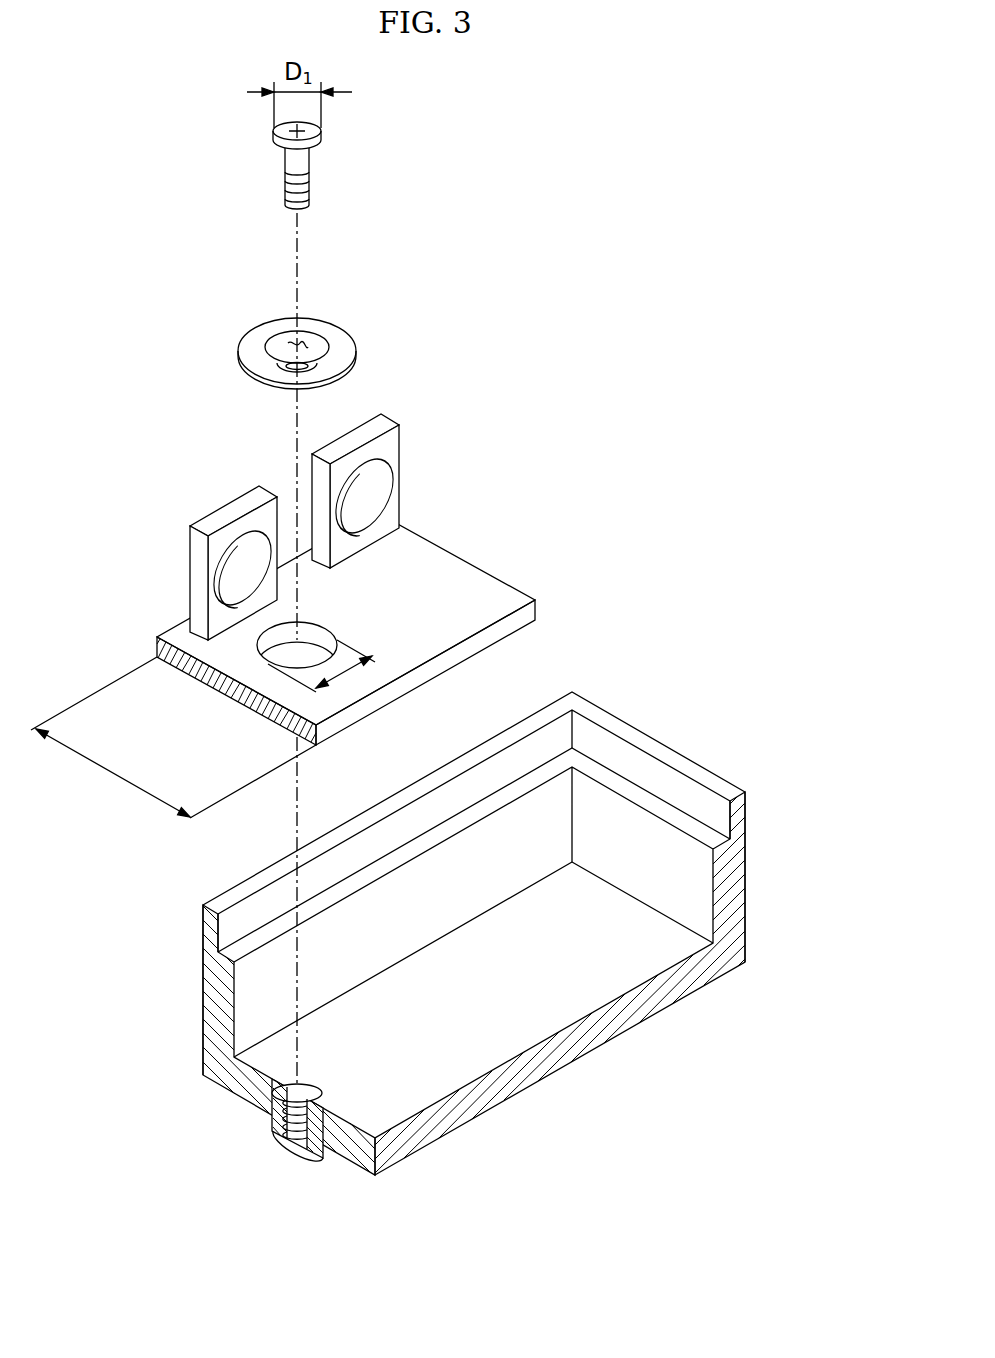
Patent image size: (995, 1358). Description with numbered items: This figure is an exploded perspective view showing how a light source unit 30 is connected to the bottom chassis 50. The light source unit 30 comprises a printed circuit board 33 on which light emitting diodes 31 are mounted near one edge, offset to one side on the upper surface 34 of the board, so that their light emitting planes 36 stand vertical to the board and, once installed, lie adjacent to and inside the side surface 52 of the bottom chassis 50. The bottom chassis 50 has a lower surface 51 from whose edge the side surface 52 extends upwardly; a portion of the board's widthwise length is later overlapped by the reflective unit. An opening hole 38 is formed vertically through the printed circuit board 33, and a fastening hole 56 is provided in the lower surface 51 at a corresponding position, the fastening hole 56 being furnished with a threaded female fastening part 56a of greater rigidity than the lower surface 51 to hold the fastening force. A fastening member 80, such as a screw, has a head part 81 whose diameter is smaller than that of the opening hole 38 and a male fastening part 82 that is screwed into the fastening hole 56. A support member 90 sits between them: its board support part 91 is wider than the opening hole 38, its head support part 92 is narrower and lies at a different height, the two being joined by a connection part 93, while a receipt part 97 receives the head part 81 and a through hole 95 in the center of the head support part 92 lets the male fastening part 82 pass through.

The light source unit 30 is at (323, 606).
The light emitting diode 31 is at (386, 424).
The printed circuit board 33 is at (533, 610).
The upper surface of the printed circuit board 34 is at (465, 587).
The light emitting plane 36 is at (382, 482).
The opening hole 38 is at (266, 657).
The bottom chassis 50 is at (535, 937).
The lower surface 51 is at (530, 1018).
The side surface 52 is at (540, 745).
The fastening hole 56 is at (308, 1083).
The female fastening part 56a is at (315, 1157).
The fastening member 80 is at (316, 167).
The head part 81 is at (321, 136).
The male fastening part 82 is at (286, 190).
The support member 90 is at (272, 339).
The board support part 91 is at (350, 347).
The head support part 92 is at (312, 352).
The connection part 93 is at (277, 343).
The through hole 95 is at (294, 370).
The receipt part 97 is at (306, 341).